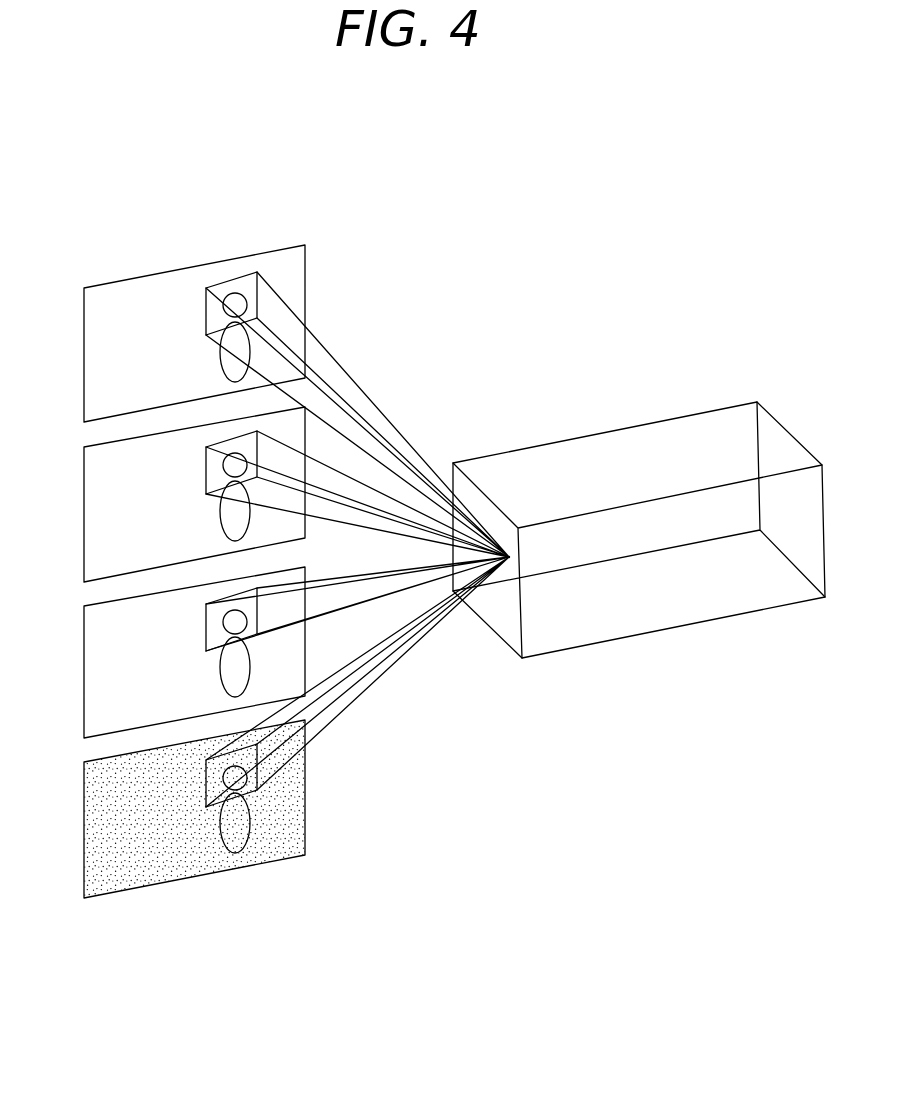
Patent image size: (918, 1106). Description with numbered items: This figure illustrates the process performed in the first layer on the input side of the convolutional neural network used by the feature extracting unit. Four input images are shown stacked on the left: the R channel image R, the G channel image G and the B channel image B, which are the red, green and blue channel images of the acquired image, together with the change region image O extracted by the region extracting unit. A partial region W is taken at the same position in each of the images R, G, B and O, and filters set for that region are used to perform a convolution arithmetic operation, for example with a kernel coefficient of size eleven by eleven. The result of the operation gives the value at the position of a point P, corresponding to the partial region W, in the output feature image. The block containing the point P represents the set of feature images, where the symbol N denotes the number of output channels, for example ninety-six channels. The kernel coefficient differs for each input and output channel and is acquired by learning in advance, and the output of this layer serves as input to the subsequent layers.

The R channel image R is at (83, 353).
The G channel image G is at (83, 515).
The B channel image B is at (83, 663).
The change region image O is at (83, 829).
The partial region W is at (240, 277).
The point P is at (510, 555).
The number of output channels N is at (522, 658).